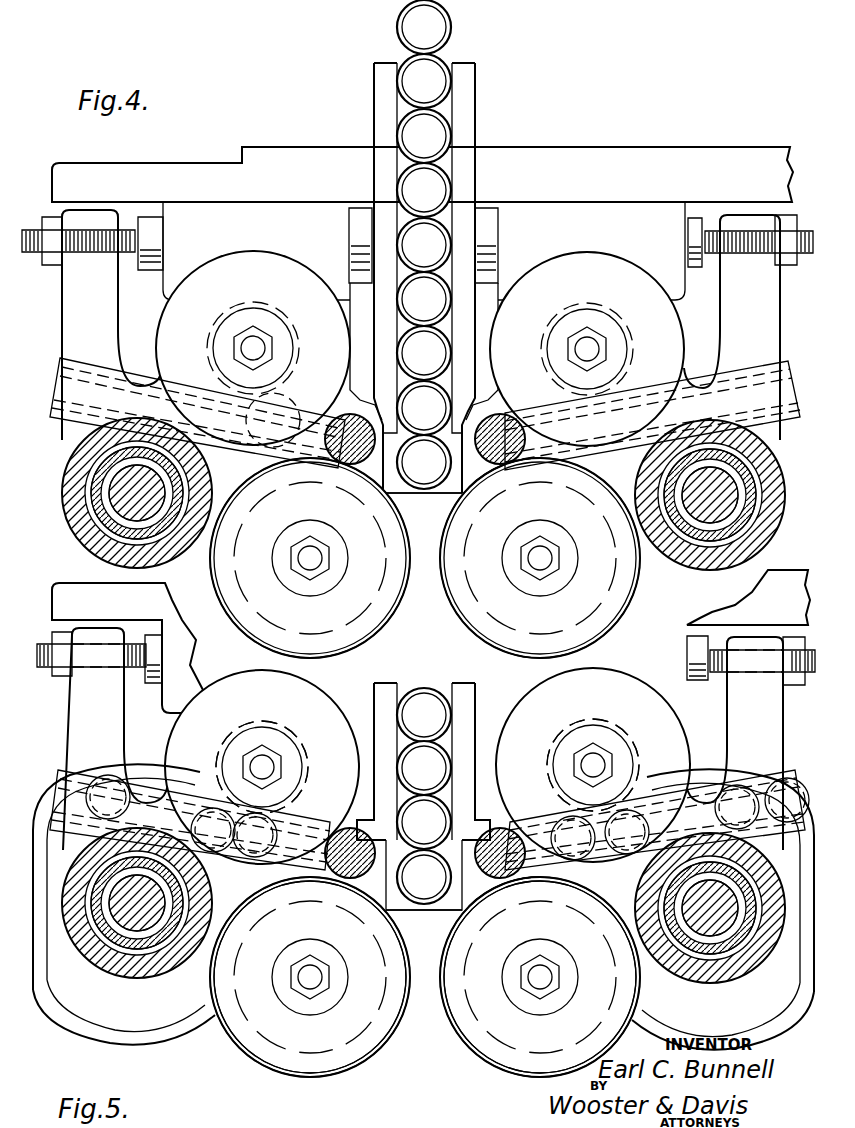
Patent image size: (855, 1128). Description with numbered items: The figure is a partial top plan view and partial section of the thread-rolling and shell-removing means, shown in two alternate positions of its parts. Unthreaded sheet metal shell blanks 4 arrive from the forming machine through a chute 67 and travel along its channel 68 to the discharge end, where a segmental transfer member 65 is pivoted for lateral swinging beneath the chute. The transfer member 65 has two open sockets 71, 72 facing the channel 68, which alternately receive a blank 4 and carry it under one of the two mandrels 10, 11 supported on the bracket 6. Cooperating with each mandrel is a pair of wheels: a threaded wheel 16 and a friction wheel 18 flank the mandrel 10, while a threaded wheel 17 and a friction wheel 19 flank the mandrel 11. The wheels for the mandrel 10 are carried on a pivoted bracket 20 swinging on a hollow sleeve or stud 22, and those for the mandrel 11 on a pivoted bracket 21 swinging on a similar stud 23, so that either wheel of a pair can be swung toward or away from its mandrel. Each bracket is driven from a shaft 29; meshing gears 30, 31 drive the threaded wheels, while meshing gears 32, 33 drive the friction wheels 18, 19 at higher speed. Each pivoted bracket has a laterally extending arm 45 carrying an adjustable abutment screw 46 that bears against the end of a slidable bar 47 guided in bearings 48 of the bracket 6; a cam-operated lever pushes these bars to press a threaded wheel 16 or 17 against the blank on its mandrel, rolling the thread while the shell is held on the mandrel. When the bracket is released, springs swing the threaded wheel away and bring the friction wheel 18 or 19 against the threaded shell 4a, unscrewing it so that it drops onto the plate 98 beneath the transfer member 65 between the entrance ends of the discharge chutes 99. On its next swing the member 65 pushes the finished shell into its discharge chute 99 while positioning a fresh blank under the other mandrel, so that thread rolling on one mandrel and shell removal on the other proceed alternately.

In FIG. 4, the shell blank 4 is at (432, 56).
In FIG. 5, the shell blank 4 is at (396, 713).
In FIG. 4, the threaded shell 4a is at (403, 420).
In FIG. 5, the threaded shell 4a is at (100, 780).
In FIG. 4, the bracket 6 is at (601, 152).
In FIG. 5, the bracket 6 is at (60, 604).
In FIG. 4, the mandrel 10 is at (356, 420).
In FIG. 5, the mandrel 10 is at (360, 838).
In FIG. 4, the mandrel 11 is at (507, 412).
In FIG. 5, the mandrel 11 is at (496, 830).
In FIG. 4, the threaded wheel 16 is at (335, 650).
In FIG. 5, the threaded wheel 16 is at (364, 1056).
In FIG. 4, the threaded wheel 17 is at (468, 646).
In FIG. 5, the threaded wheel 17 is at (478, 1060).
In FIG. 4, the friction wheel 18 is at (262, 258).
In FIG. 5, the friction wheel 18 is at (310, 703).
In FIG. 4, the friction wheel 19 is at (585, 256).
In FIG. 5, the friction wheel 19 is at (610, 675).
In FIG. 4, the pivoted bracket 20 is at (228, 566).
In FIG. 5, the pivoted bracket 20 is at (226, 983).
In FIG. 4, the pivoted bracket 21 is at (642, 562).
In FIG. 5, the pivoted bracket 21 is at (642, 985).
In FIG. 4, the hollow sleeve or stud 22 is at (788, 540).
In FIG. 5, the hollow sleeve or stud 22 is at (423, 905).
In FIG. 4, the hollow sleeve or stud 23 is at (130, 500).
In FIG. 5, the hollow sleeve or stud 23 is at (423, 905).
In FIG. 4, the shaft 29 is at (133, 488).
In FIG. 5, the shaft 29 is at (130, 912).
In FIG. 5, the gear 30 is at (130, 1000).
In FIG. 5, the gear 31 is at (326, 1074).
In FIG. 5, the gear 32 is at (150, 790).
In FIG. 5, the gear 33 is at (248, 722).
In FIG. 4, the laterally extending arm 45 is at (72, 320).
In FIG. 5, the laterally extending arm 45 is at (72, 709).
In FIG. 4, the adjustable abutment screw 46 is at (102, 252).
In FIG. 5, the adjustable abutment screw 46 is at (124, 672).
In FIG. 4, the slidable bar 47 is at (152, 264).
In FIG. 5, the slidable bar 47 is at (160, 666).
In FIG. 4, the bearings 48 is at (287, 214).
In FIG. 4, the transfer member 65 is at (436, 495).
In FIG. 5, the transfer member 65 is at (435, 912).
In FIG. 4, the chute 67 is at (470, 110).
In FIG. 5, the chute 67 is at (465, 700).
In FIG. 4, the channel 68 is at (455, 160).
In FIG. 5, the channel 68 is at (450, 746).
In FIG. 4, the open socket 71 is at (407, 446).
In FIG. 5, the open socket 71 is at (409, 866).
In FIG. 4, the open socket 72 is at (456, 446).
In FIG. 5, the open socket 72 is at (452, 863).
In FIG. 4, the plate 98 is at (472, 506).
In FIG. 5, the plate 98 is at (470, 920).
In FIG. 4, the discharge chute 99 is at (220, 452).
In FIG. 5, the discharge chute 99 is at (320, 832).